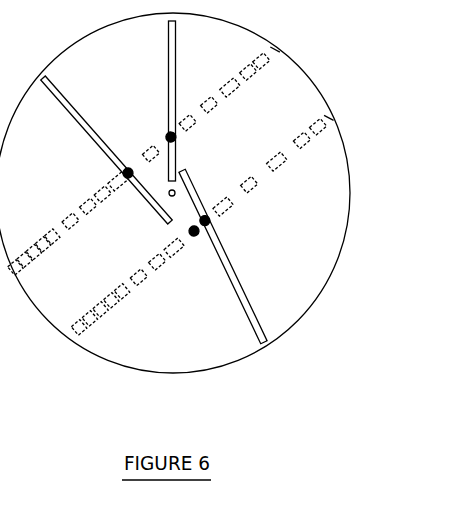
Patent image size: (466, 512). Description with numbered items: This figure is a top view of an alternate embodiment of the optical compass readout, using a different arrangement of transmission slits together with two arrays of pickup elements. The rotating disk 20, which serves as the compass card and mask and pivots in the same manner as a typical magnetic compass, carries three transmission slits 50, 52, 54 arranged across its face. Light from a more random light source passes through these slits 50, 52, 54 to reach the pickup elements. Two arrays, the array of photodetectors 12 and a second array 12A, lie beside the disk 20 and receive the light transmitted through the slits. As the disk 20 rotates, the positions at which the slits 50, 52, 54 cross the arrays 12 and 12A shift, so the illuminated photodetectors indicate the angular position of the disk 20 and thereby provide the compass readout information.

The array of photodetectors 12 is at (54, 224).
The second array 12A is at (101, 298).
The disk 20 is at (294, 84).
The slit 50 is at (59, 93).
The slit 52 is at (177, 45).
The slit 54 is at (253, 304).